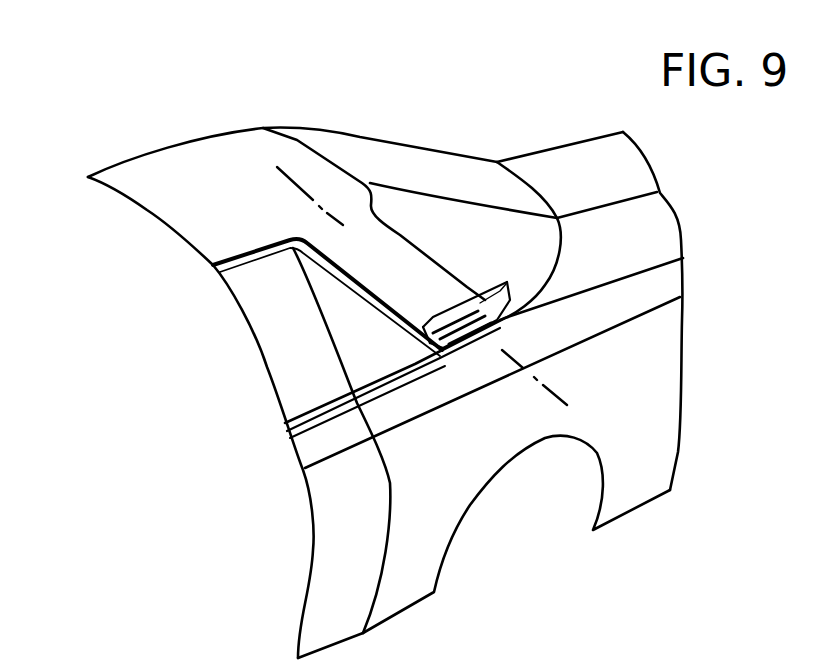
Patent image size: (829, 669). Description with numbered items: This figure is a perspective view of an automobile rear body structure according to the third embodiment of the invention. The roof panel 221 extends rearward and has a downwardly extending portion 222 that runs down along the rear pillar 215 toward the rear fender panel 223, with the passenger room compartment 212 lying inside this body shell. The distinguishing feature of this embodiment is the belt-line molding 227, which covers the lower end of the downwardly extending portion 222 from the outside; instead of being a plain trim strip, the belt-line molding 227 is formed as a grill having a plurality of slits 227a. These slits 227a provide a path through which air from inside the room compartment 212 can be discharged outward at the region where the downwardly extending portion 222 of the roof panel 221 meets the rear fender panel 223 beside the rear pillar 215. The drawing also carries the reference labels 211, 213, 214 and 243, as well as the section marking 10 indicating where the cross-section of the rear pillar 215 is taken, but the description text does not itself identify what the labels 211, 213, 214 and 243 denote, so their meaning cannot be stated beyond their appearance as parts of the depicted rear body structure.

The vehicle body rear side structure 211 is at (550, 93).
The room compartment 212 is at (200, 362).
The roof panel 213 is at (243, 127).
The rear fender (quarter panel) 214 is at (658, 330).
The rear pillar 215 is at (552, 241).
The roof panel 221 is at (327, 153).
The downwardly extending portion 222 is at (415, 263).
The rear fender panel 223 is at (666, 359).
The belt-line molding 227 is at (503, 325).
The slits 227a is at (473, 243).
The belt molding 243 is at (360, 350).
The section line 10 is at (287, 182).